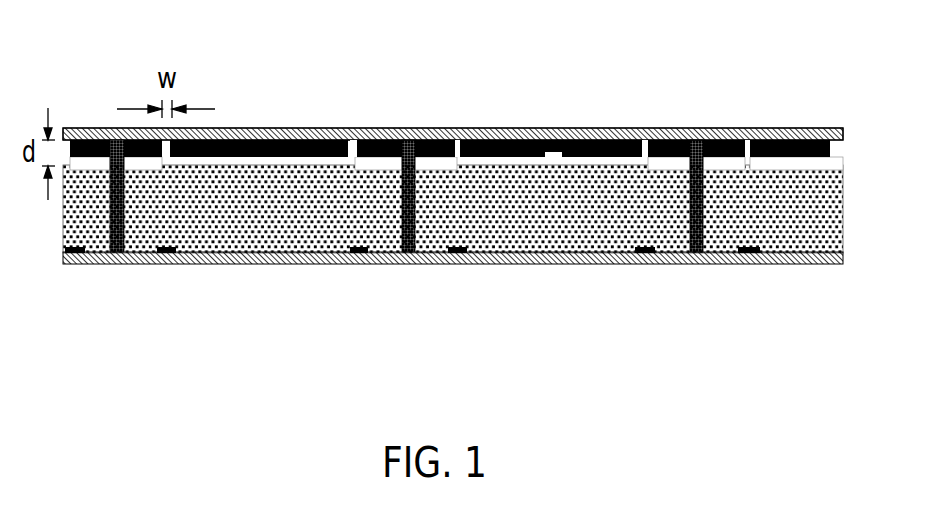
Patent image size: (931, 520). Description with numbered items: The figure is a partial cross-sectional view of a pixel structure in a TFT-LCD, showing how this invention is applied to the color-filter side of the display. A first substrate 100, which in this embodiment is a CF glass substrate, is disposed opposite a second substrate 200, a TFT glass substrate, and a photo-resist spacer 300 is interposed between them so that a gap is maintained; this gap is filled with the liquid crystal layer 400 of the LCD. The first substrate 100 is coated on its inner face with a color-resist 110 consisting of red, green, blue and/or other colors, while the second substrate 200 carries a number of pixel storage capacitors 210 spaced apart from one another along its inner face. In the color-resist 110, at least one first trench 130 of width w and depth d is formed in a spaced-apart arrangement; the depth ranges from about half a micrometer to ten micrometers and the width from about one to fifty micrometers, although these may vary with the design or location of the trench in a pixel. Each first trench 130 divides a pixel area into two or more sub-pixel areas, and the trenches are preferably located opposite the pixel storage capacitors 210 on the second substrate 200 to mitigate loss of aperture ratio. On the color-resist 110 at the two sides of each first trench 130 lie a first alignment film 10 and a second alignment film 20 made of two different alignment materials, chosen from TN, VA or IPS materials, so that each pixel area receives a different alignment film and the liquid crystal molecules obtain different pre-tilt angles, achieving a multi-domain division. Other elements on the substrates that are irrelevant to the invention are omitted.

The first alignment film 10 is at (265, 160).
The second alignment film 20 is at (88, 168).
The first substrate 100 is at (825, 133).
The color-resist 110 is at (600, 140).
The first trench 130 is at (455, 150).
The second substrate 200 is at (818, 258).
The pixel storage capacitor 210 is at (453, 262).
The photo-resist spacer 300 is at (693, 256).
The liquid crystal layer 400 is at (266, 230).